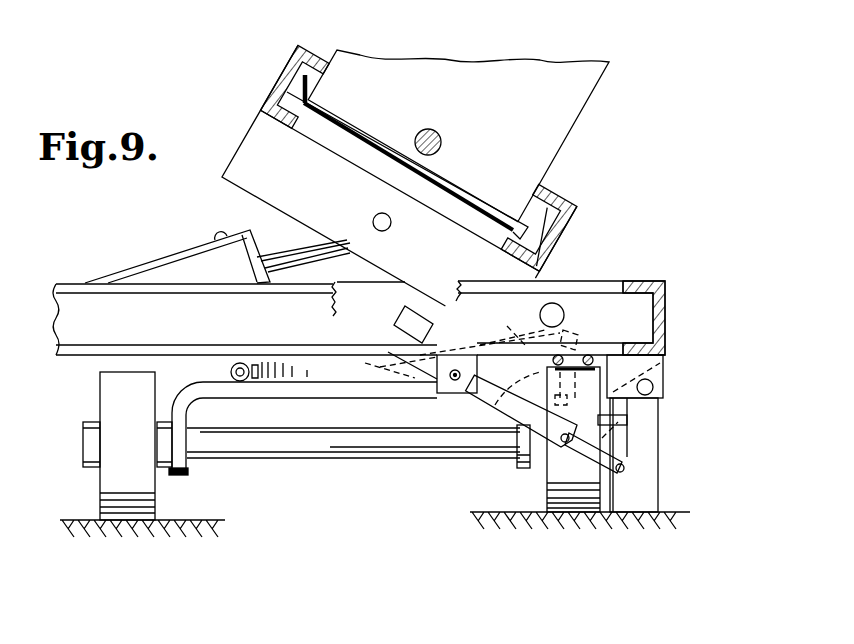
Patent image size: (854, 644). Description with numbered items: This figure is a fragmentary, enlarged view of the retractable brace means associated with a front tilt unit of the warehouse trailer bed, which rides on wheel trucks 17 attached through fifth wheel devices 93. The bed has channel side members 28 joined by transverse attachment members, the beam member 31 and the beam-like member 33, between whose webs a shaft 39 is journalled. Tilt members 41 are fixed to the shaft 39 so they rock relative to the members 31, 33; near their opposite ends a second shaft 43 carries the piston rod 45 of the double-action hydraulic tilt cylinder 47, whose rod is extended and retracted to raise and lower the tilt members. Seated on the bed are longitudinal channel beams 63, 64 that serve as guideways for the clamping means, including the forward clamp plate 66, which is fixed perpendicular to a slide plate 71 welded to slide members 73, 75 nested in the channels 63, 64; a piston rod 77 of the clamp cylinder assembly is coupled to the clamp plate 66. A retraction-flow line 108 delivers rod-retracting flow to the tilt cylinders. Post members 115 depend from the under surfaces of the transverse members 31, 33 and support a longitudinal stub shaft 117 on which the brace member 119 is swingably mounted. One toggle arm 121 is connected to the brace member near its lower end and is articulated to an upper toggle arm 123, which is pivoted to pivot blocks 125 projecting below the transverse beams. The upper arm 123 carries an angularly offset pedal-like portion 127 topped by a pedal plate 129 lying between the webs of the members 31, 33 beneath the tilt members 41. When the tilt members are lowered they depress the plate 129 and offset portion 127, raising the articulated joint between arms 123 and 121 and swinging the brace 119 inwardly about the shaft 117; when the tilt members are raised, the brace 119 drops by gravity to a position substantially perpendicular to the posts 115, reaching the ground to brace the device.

The wheel truck 17 is at (360, 469).
The side member 28 is at (666, 287).
The transverse intermediate beam member 31 is at (366, 293).
The beam-like member 33 is at (149, 322).
The shaft 39 is at (563, 313).
The tilt member 41 is at (288, 181).
The second shaft 43 is at (391, 222).
The piston rod 45 is at (303, 250).
The cylinder 47 is at (238, 255).
The longitudinal beam member 63 is at (562, 194).
The longitudinal beam member 64 is at (293, 63).
The forward clamp plate 66 is at (499, 123).
The slide plate 71 is at (460, 192).
The slide member 73 is at (546, 224).
The slide member 75 is at (296, 91).
The piston rod 77 is at (419, 131).
The fifth wheel device 93 is at (347, 373).
The retraction-flow line 108 is at (271, 349).
The post member 115 is at (667, 362).
The stub shaft member 117 is at (654, 388).
The brace member 119 is at (670, 446).
The toggle arm 121 is at (572, 330).
The upper toggle arm 123 is at (477, 410).
The pivot block 125 is at (452, 396).
The offset portion 127 is at (410, 334).
The pedal plate 129 is at (411, 311).